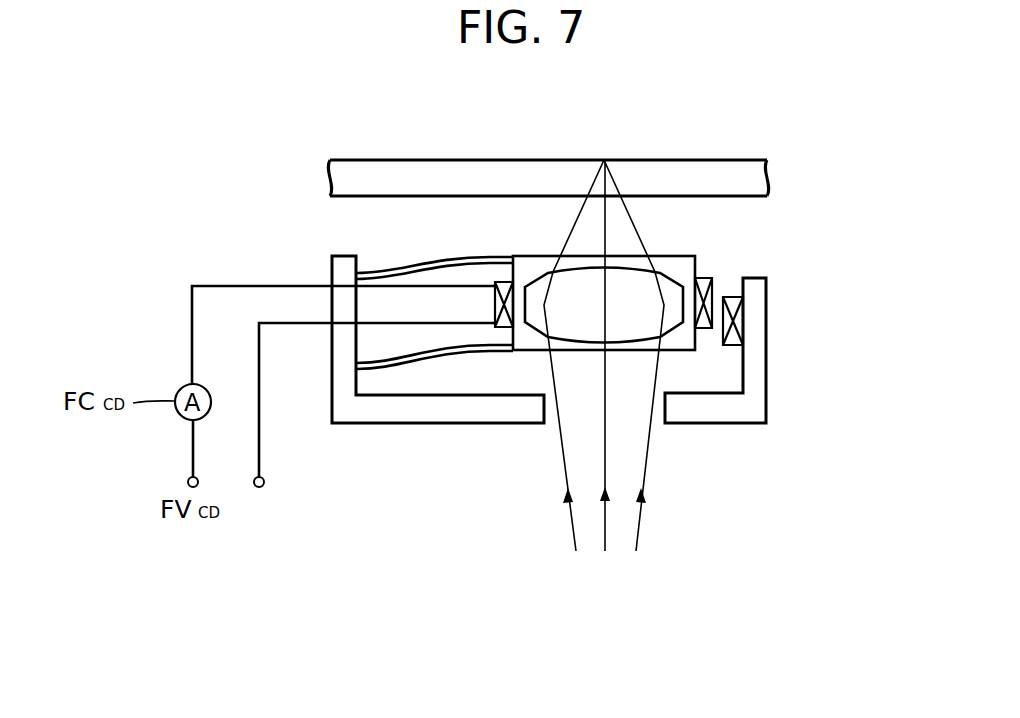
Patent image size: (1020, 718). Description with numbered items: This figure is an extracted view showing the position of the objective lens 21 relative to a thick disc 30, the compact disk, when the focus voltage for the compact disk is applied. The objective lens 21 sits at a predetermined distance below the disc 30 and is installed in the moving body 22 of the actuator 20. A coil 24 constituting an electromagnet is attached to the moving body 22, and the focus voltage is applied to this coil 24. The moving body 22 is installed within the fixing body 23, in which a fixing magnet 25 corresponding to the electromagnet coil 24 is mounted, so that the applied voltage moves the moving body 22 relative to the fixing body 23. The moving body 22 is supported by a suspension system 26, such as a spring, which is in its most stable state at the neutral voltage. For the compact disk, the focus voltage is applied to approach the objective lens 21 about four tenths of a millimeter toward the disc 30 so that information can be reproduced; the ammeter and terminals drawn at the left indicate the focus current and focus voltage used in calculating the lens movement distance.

The actuator 20 is at (797, 285).
The objective lens 21 is at (662, 270).
The moving body 22 is at (681, 355).
The fixing body 23 is at (766, 347).
The coil 24 is at (714, 278).
The fixing magnet 25 is at (740, 350).
The suspension system 26 is at (375, 272).
The optical disc (CD) 30 is at (718, 157).